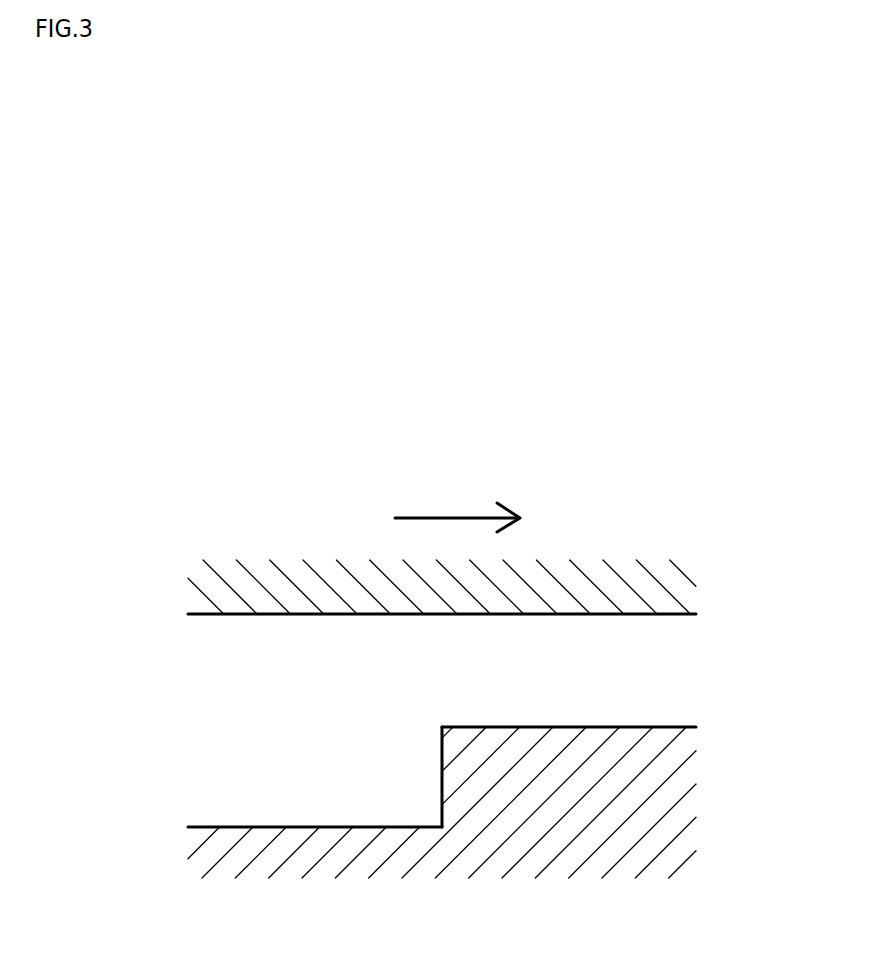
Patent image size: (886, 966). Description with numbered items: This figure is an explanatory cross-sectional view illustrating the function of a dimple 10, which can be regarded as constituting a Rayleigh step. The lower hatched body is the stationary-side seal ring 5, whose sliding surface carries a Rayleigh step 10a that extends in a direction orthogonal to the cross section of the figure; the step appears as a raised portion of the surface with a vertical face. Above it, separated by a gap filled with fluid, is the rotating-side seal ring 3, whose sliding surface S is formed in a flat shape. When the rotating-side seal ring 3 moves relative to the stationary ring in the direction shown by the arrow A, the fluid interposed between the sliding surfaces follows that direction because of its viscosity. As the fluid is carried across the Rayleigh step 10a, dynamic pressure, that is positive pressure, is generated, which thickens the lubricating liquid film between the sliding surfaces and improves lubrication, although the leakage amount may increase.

The rotating-side seal ring 3 is at (325, 567).
The sliding surface S is at (573, 615).
The direction of movement A is at (457, 507).
The dimple 10 is at (313, 827).
The Rayleigh step 10a is at (442, 763).
The stationary-side seal ring 5 is at (332, 865).